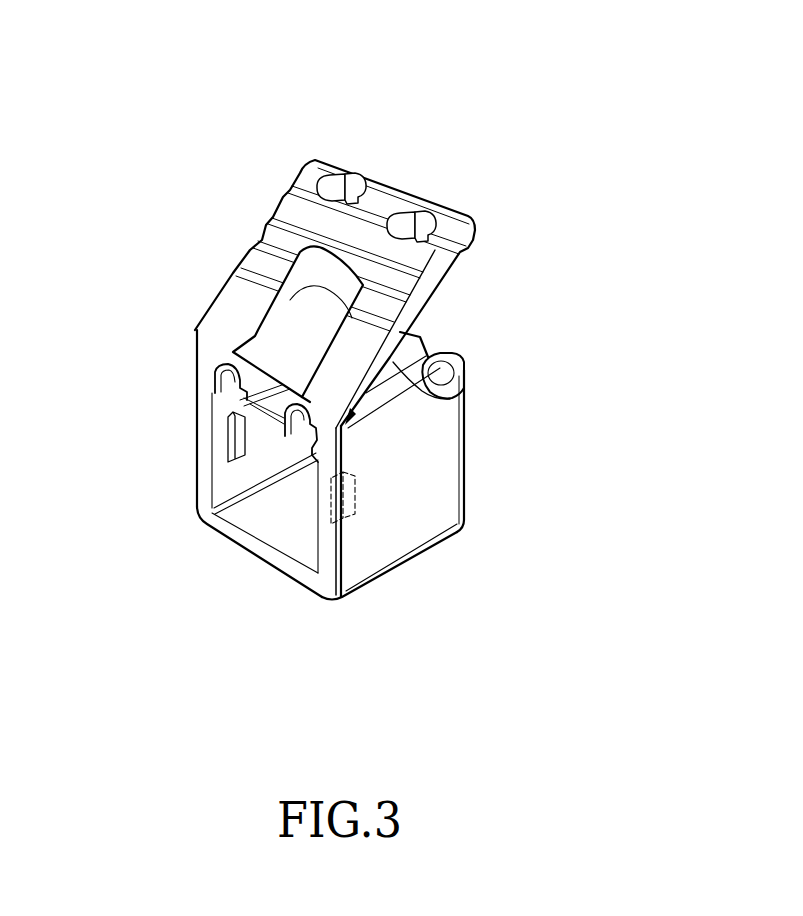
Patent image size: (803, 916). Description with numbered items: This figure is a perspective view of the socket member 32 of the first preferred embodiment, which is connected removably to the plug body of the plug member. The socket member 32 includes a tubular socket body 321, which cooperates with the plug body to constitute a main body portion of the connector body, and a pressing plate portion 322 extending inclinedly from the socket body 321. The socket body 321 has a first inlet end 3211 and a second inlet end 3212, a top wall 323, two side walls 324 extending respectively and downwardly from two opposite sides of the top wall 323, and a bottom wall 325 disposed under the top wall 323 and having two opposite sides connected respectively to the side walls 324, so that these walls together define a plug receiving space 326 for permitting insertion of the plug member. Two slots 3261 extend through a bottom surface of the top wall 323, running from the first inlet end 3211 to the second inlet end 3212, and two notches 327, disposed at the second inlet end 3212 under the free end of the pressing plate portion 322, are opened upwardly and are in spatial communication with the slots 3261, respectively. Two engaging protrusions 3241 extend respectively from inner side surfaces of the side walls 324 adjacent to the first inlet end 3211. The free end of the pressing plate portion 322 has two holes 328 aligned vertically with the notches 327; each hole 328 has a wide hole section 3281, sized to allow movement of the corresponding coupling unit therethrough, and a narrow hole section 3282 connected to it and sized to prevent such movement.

The socket member 32 is at (160, 182).
The tubular socket body 321 is at (455, 552).
The first inlet end 3211 is at (307, 577).
The second inlet end 3212 is at (467, 500).
The pressing plate portion 322 is at (237, 295).
The top wall 323 is at (452, 401).
The side walls 324 is at (195, 449).
The engaging protrusions 3241 is at (228, 457).
The bottom wall 325 is at (405, 563).
The plug receiving space 326 is at (268, 530).
The slots 3261 is at (283, 427).
The notches 327 is at (275, 230).
The holes 328 is at (411, 53).
The wide hole section 3281 is at (311, 160).
The narrow hole section 3282 is at (356, 165).